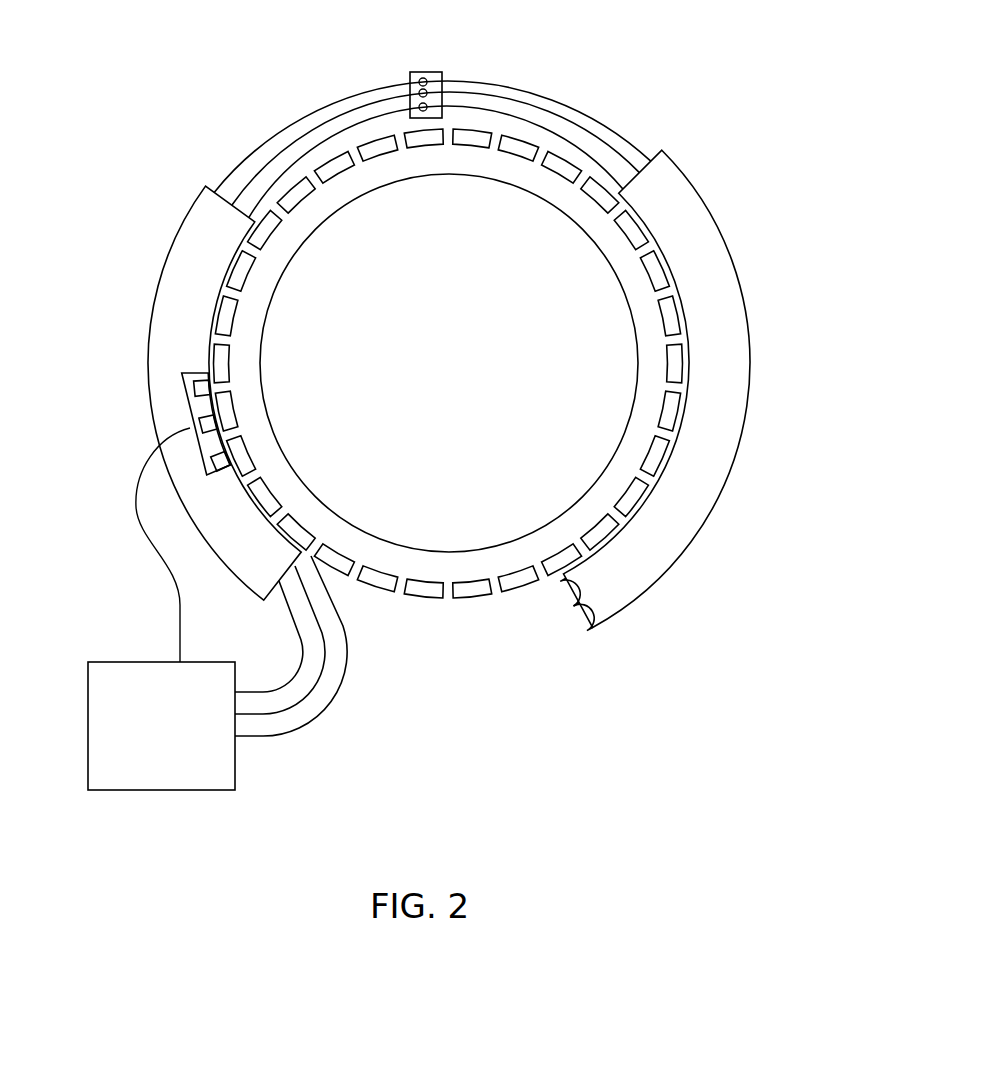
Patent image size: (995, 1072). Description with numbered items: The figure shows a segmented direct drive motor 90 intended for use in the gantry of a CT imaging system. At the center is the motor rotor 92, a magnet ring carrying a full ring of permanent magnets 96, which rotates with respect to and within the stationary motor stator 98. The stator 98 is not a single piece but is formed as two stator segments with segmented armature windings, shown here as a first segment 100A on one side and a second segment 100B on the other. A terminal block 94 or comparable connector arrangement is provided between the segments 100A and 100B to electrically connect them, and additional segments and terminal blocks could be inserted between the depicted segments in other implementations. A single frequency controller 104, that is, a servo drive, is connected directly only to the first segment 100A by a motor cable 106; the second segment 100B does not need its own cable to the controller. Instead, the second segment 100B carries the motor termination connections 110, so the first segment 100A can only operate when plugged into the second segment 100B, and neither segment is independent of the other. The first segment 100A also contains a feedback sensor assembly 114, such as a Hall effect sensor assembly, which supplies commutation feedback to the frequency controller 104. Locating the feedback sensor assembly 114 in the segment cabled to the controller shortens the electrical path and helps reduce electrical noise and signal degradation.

The segmented direct drive motor 90 is at (762, 130).
The motor rotor 92 is at (617, 440).
The terminal block 94 is at (424, 70).
The permanent magnets 96 is at (603, 187).
The motor stator 98 is at (768, 331).
The first segment 100A is at (148, 322).
The second segment 100B is at (738, 452).
The frequency controller 104 is at (172, 798).
The motor cable 106 is at (358, 673).
The motor termination connections 110 is at (559, 640).
The feedback sensor assembly 114 is at (181, 405).